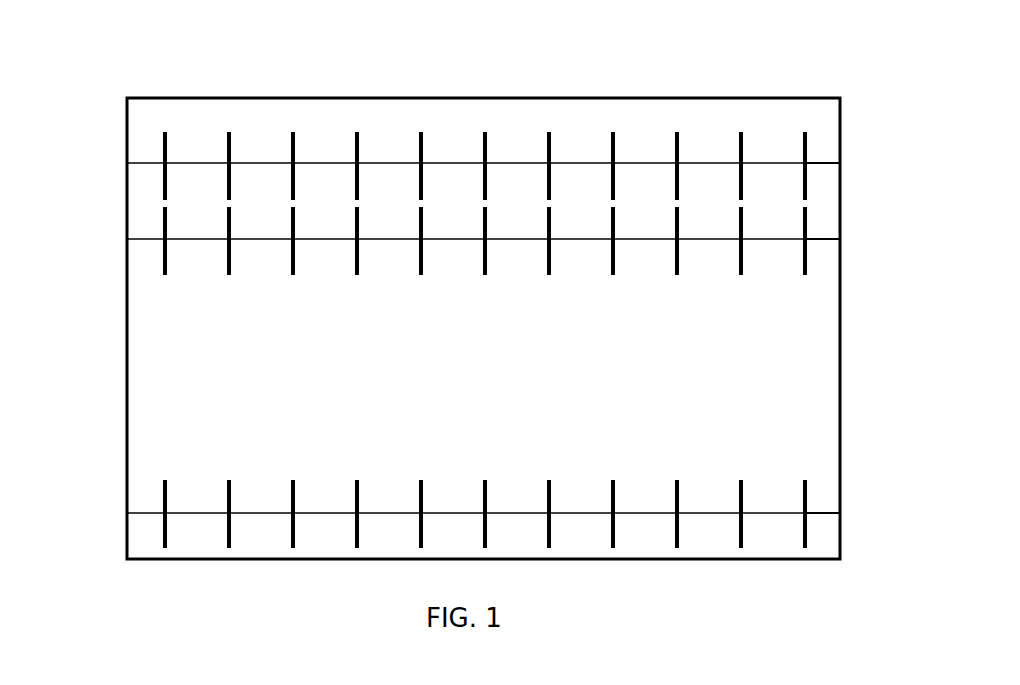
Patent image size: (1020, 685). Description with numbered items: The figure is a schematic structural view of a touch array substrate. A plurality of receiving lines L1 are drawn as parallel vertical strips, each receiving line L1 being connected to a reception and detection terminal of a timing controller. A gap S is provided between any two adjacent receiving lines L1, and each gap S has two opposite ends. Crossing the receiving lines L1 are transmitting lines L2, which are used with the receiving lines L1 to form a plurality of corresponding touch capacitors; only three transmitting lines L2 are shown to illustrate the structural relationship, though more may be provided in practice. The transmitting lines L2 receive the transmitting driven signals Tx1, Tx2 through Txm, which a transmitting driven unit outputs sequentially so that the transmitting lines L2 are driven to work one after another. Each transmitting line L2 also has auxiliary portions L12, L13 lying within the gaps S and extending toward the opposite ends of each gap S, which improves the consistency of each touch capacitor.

The receiving line L1 is at (202, 118).
The transmitting line L2 is at (827, 157).
The bridge portion L12 is at (741, 212).
The connecting portion L13 is at (739, 273).
The gap S is at (738, 418).
The transmitting driven signal Tx1 is at (127, 163).
The transmitting driven signal Tx2 is at (127, 239).
The transmitting driven signal Txm is at (127, 513).